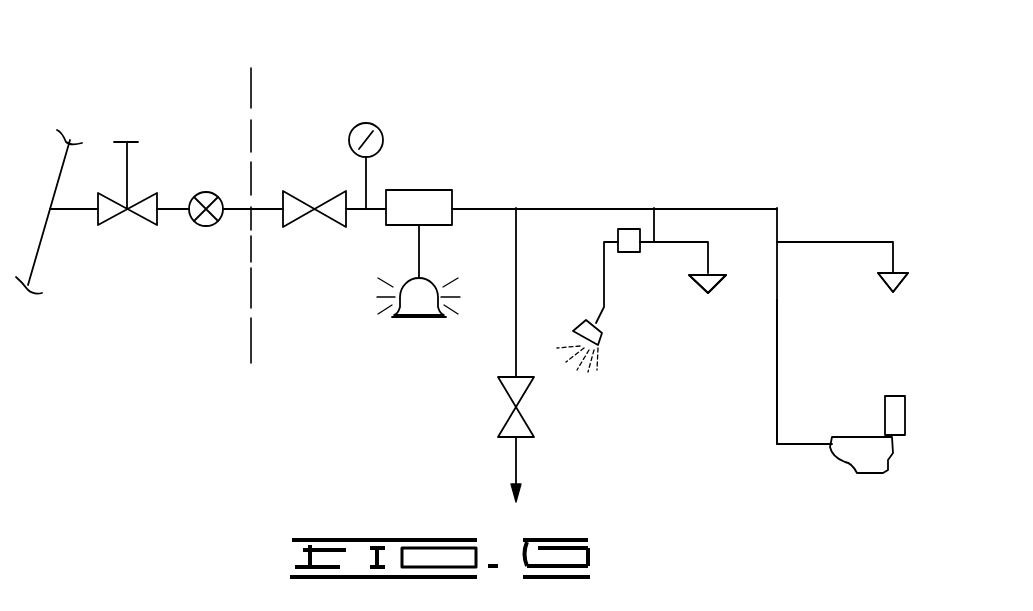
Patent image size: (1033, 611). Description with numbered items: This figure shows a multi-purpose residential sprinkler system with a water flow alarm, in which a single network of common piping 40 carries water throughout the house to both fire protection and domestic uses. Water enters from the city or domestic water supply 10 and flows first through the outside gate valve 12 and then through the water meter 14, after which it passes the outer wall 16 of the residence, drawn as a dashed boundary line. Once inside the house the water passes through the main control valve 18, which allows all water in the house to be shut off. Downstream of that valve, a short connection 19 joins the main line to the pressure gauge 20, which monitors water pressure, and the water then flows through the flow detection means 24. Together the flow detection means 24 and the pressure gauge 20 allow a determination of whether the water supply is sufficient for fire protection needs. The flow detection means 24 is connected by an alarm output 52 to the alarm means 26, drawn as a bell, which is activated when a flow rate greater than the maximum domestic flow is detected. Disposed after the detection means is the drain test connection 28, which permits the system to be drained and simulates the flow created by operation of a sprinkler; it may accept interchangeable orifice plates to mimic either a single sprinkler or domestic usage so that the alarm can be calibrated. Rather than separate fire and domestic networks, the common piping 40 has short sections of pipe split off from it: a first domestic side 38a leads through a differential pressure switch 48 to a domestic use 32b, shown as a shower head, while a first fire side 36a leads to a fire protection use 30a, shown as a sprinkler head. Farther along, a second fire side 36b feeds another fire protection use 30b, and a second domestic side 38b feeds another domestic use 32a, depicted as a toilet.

The city/domestic water supply 10 is at (35, 266).
The outside gate valve 12 is at (143, 197).
The water meter 14 is at (205, 228).
The outer wall 16 is at (251, 85).
The main control valve 18 is at (323, 197).
The pipe junction 19 is at (357, 211).
The pressure gauge 20 is at (377, 125).
The flow detection means 24 is at (425, 190).
The alarm means 26 is at (417, 318).
The drain test connection 28 is at (502, 425).
The fire protection use 30a is at (707, 293).
The fire protection use 30b is at (892, 292).
The domestic use 32a is at (838, 462).
The domestic use 32b is at (602, 340).
The fire side 36a is at (708, 262).
The fire side 36b is at (892, 258).
The domestic side 38a is at (604, 273).
The domestic side 38b is at (777, 412).
The common piping 40 is at (707, 207).
The differential pressure switch 48 is at (628, 229).
The alarm output 52 is at (420, 245).